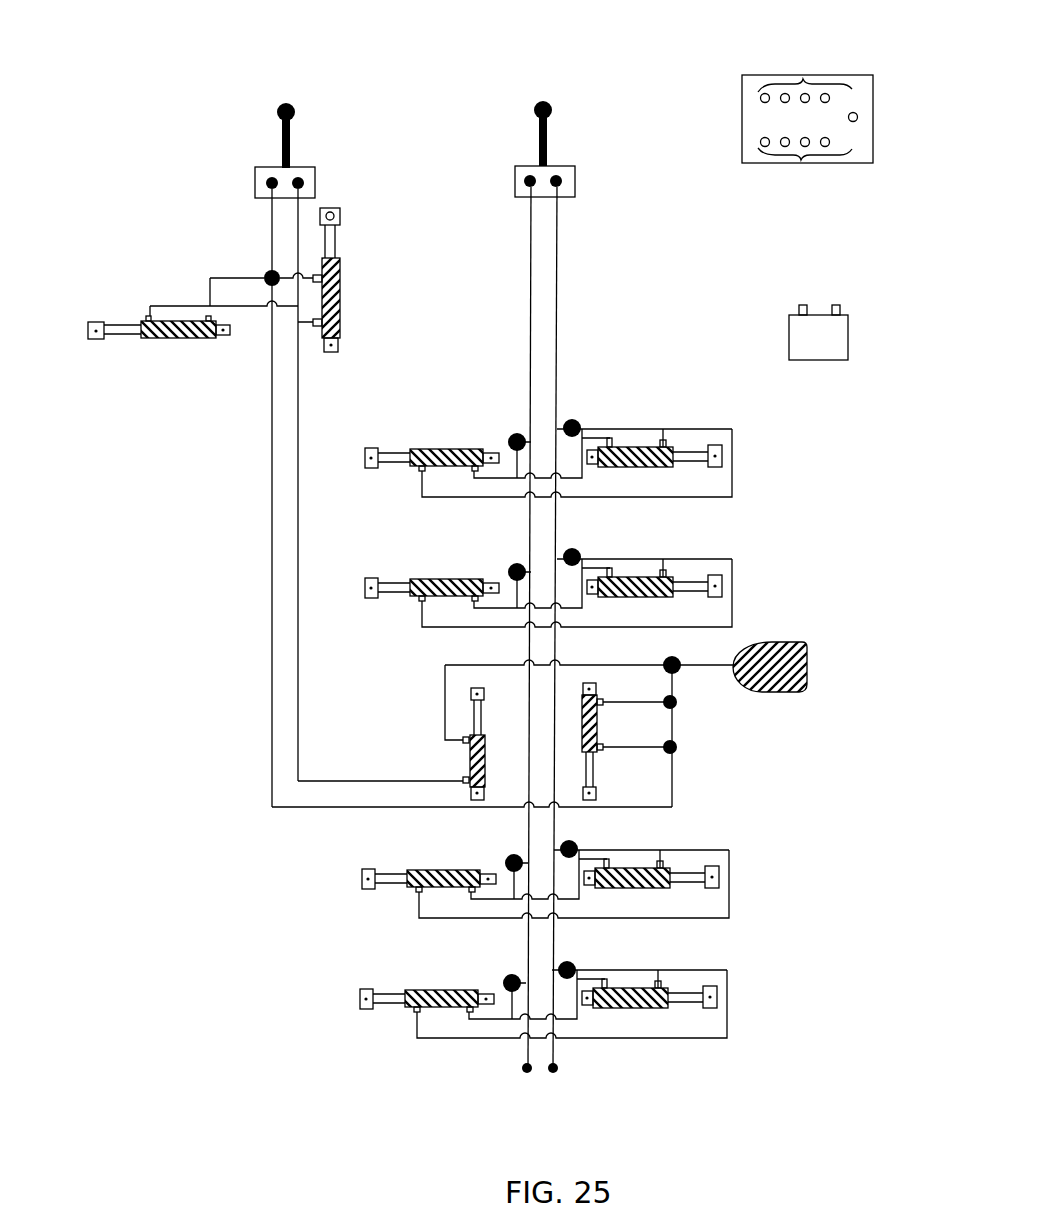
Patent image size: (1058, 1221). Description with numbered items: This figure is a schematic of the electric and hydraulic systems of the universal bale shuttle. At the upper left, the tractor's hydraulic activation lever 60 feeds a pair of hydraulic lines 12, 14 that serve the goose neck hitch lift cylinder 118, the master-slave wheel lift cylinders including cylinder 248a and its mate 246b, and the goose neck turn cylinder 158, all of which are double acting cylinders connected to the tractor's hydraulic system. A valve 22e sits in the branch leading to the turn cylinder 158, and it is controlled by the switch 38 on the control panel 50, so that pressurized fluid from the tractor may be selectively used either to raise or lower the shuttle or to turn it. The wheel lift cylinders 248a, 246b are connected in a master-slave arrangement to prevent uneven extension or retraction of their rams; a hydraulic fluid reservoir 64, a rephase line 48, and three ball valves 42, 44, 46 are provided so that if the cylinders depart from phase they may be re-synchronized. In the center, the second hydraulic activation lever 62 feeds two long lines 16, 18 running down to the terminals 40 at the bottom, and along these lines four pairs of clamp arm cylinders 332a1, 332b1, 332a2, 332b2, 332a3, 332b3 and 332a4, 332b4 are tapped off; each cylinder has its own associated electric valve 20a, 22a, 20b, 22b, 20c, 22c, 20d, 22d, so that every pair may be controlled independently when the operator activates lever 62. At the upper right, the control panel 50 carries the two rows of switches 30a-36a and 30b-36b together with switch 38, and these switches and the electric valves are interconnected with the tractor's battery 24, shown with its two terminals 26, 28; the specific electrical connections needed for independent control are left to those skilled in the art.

The hydraulic activation lever 60 is at (282, 140).
The hydraulic activation lever 62 is at (538, 140).
The conductor 12 is at (270, 210).
The conductor 14 is at (300, 222).
The conductor 16 is at (557, 207).
The conductor 18 is at (560, 247).
The valve 22e is at (264, 278).
The hydraulic cylinder 158 is at (174, 339).
The hydraulic cylinder 118 is at (340, 298).
The control panel 50 is at (861, 75).
The switches 30a-36a is at (803, 78).
The switches 30b-36b is at (866, 220).
The switch 38 is at (857, 116).
The battery 24 is at (818, 345).
The terminal 26 is at (803, 305).
The terminal 28 is at (836, 305).
The electric valve 20a is at (516, 433).
The electric valve 22a is at (580, 421).
The hydraulic cylinder 332a1 is at (452, 449).
The hydraulic cylinder 332b1 is at (640, 467).
The electric valve 20b is at (498, 554).
The electric valve 22b is at (644, 535).
The hydraulic cylinder 332a2 is at (525, 579).
The hydraulic cylinder 332b2 is at (651, 609).
The ball valve 42 is at (674, 662).
The hydraulic fluid reservoir 64 is at (808, 648).
The ball valve 44 is at (677, 701).
The ball valve 46 is at (677, 747).
The rephase line 48 is at (674, 724).
The actuator 246b is at (597, 752).
The hydraulic cylinder 248a is at (468, 764).
The electric valve 20c is at (486, 854).
The electric valve 22c is at (641, 836).
The hydraulic cylinder 332a3 is at (504, 867).
The hydraulic cylinder 332b3 is at (668, 904).
The electric valve 20d is at (482, 968).
The electric valve 22d is at (639, 949).
The hydraulic cylinder 332a4 is at (505, 987).
The hydraulic cylinder 332b4 is at (667, 1026).
The terminals 40 is at (527, 1072).